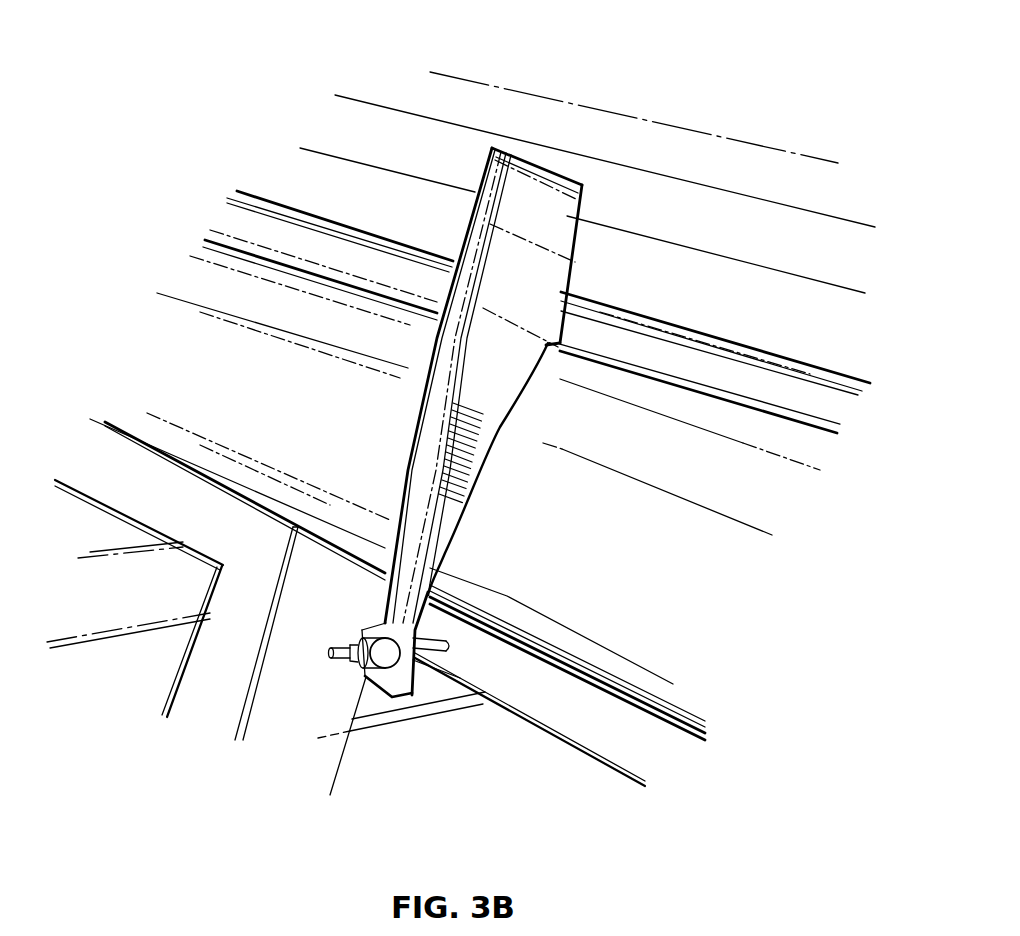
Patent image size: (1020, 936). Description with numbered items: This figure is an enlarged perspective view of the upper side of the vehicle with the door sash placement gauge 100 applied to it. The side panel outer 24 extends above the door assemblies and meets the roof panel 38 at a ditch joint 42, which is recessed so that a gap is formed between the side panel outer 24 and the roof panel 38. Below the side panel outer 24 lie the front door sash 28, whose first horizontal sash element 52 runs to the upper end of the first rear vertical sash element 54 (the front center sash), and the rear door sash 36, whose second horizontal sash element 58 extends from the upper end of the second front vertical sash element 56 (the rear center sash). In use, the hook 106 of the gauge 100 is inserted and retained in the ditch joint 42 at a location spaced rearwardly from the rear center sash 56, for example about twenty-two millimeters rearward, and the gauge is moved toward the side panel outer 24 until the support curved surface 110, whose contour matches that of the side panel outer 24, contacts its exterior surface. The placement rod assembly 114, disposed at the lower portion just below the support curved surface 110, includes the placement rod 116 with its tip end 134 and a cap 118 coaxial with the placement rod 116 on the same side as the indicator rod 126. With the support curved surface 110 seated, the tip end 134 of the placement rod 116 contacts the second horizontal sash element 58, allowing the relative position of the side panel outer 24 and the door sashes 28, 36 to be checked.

The door sash placement gauge 100 is at (493, 355).
The roof panel 38 is at (748, 231).
The hook 106 is at (563, 345).
The front door sash 28 is at (196, 469).
The side panel outer 24 is at (338, 405).
The ditch joint 42 is at (735, 375).
The support curved surface 110 is at (478, 464).
The first horizontal sash element 52 is at (131, 497).
The cap 118 is at (390, 620).
The placement rod 116 is at (438, 622).
The tip end 134 is at (450, 640).
The rear door sash 36 is at (632, 692).
The first rear vertical sash element 54 is at (208, 667).
The indicator rod 126 is at (322, 656).
The placement rod assembly 114 is at (449, 654).
The second front vertical sash element 56 is at (293, 733).
The second horizontal sash element 58 is at (563, 720).